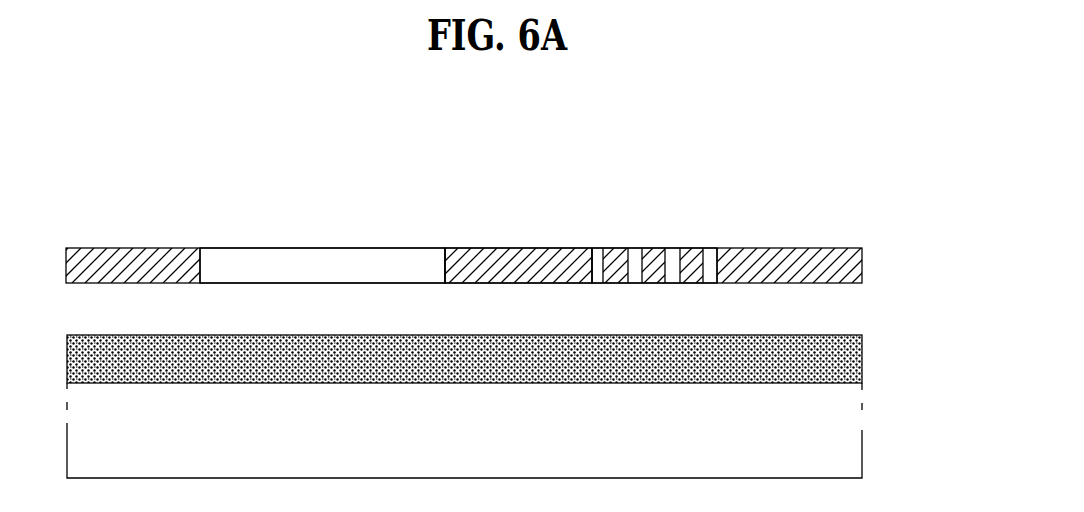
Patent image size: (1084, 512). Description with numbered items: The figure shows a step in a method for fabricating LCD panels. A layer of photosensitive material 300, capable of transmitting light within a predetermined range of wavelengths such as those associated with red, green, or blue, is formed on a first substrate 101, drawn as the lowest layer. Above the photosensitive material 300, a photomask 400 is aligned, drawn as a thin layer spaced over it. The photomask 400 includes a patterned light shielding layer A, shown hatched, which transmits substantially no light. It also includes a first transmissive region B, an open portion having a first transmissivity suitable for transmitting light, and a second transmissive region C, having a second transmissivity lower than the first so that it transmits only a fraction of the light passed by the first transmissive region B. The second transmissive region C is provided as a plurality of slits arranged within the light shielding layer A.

The photomask 400 is at (861, 269).
The photosensitive material 300 is at (861, 356).
The first substrate 101 is at (850, 426).
The light shielding layer A is at (516, 262).
The first transmissive region B is at (319, 260).
The second transmissive region C is at (673, 262).